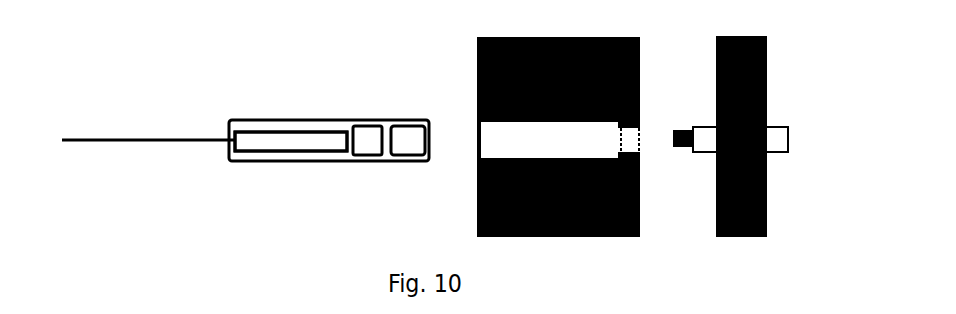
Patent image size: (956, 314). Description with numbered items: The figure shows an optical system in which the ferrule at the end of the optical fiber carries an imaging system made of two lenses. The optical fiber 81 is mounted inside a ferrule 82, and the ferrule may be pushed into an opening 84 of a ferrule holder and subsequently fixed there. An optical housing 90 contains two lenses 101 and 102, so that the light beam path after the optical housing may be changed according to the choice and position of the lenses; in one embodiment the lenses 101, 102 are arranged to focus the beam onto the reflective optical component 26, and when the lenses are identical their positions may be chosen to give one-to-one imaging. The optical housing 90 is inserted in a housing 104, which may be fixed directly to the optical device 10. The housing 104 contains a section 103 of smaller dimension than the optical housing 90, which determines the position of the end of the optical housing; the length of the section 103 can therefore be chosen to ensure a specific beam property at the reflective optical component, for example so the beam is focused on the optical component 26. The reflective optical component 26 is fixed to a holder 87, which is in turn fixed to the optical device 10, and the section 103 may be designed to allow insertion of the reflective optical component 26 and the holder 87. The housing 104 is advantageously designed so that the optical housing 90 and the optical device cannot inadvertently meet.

The optical device 10 is at (748, 238).
The reflective optical component 26 is at (683, 126).
The optical fiber 81 is at (118, 143).
The ferrule 82 is at (257, 161).
The opening 84 is at (464, 152).
The holder 87 is at (787, 153).
The optical housing 90 is at (313, 162).
The lens 101 is at (363, 158).
The lens 102 is at (412, 122).
The section 103 is at (642, 144).
The housing 104 is at (520, 238).